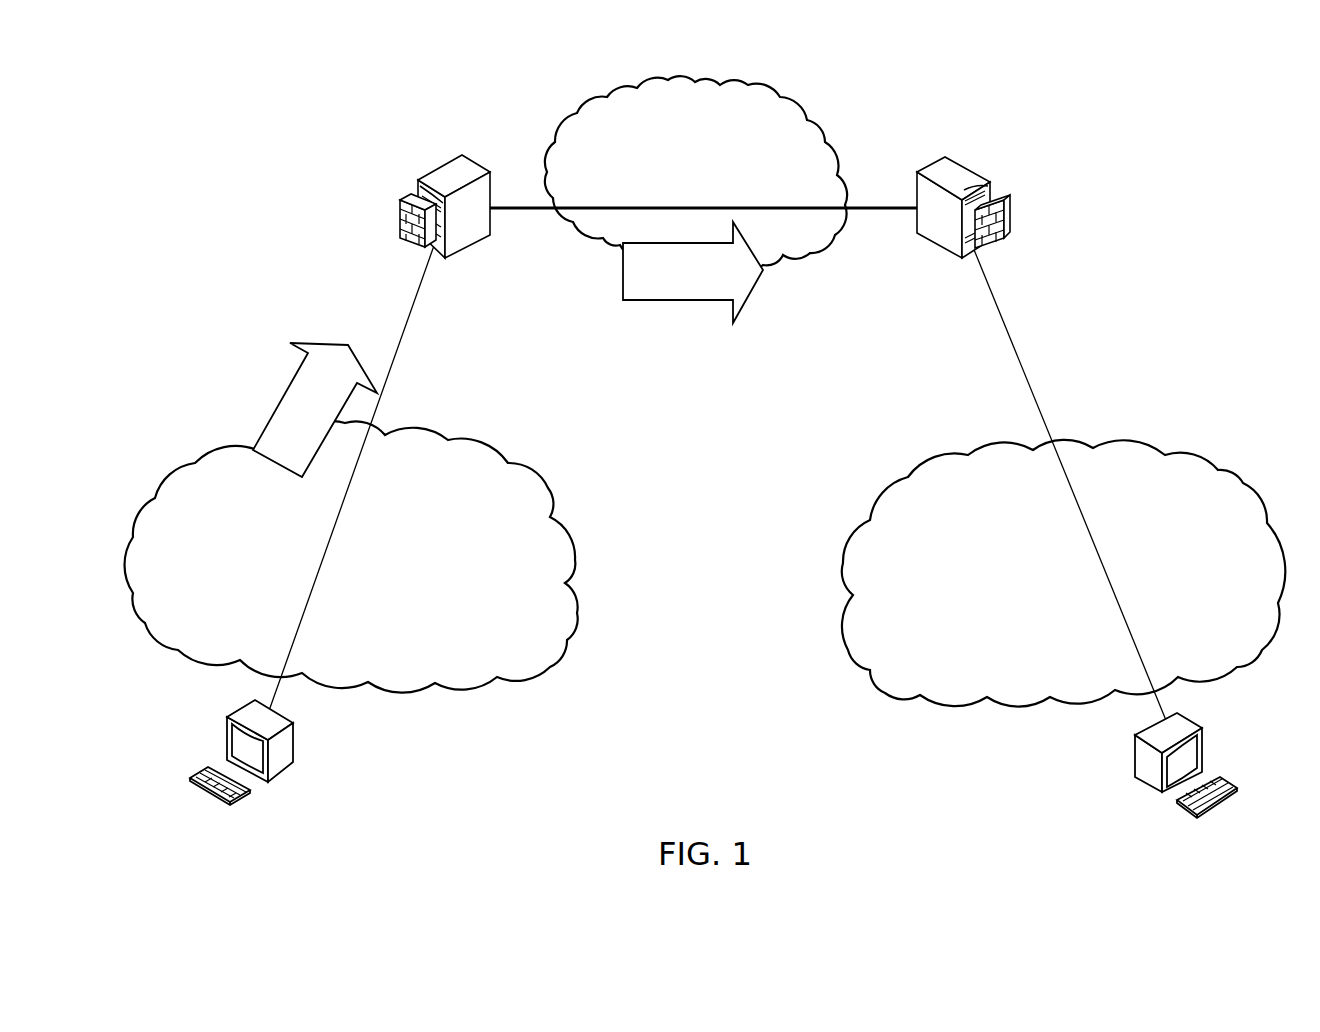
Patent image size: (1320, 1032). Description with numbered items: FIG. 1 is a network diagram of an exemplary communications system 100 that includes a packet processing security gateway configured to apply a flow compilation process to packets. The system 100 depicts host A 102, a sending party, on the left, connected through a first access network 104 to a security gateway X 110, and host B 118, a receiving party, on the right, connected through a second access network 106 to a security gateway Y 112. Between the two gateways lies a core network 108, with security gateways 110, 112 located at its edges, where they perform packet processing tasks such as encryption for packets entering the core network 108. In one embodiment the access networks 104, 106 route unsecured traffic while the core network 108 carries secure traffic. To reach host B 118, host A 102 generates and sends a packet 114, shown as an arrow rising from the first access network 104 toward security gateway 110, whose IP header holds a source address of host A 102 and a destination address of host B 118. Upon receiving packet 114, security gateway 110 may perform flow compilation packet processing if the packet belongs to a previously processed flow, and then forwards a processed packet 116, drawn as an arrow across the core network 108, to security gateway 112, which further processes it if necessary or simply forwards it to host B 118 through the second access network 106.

The system 100 is at (1097, 109).
The host A 102 is at (225, 737).
The access network 104 is at (473, 697).
The access network 106 is at (940, 712).
The core network 108 is at (832, 137).
The security gateway 110 is at (440, 170).
The security gateway 112 is at (968, 168).
The packet 114 is at (280, 393).
The processed packet 116 is at (683, 300).
The host B 118 is at (1205, 745).